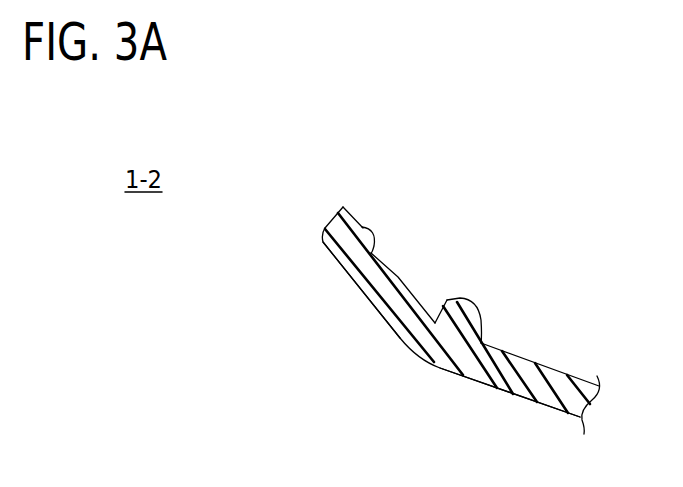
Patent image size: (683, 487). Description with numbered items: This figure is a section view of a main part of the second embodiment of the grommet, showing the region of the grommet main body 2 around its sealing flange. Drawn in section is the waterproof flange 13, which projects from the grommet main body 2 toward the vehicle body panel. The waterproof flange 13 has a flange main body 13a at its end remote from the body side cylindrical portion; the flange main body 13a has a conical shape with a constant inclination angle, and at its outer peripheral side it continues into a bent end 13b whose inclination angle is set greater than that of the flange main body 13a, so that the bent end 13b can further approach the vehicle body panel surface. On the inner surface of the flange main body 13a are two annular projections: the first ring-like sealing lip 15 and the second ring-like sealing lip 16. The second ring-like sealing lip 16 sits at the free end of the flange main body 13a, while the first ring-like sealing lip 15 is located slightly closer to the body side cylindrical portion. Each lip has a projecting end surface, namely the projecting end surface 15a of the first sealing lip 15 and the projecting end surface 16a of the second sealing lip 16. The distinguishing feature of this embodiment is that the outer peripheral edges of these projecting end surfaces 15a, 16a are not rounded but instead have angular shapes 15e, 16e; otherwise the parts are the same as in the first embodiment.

The grommet main body 2 is at (402, 387).
The waterproof flange 13 is at (549, 366).
The flange main body 13a is at (506, 393).
The bent end 13b is at (370, 302).
The first ring-like sealing lip 15 is at (474, 321).
The projecting end surface of first sealing lip 15a is at (460, 301).
The angular shape of first sealing lip 15e is at (444, 300).
The second ring-like sealing lip 16 is at (372, 228).
The projecting end surface of second sealing lip 16a is at (361, 227).
The angular shape of second sealing lip 16e is at (343, 207).